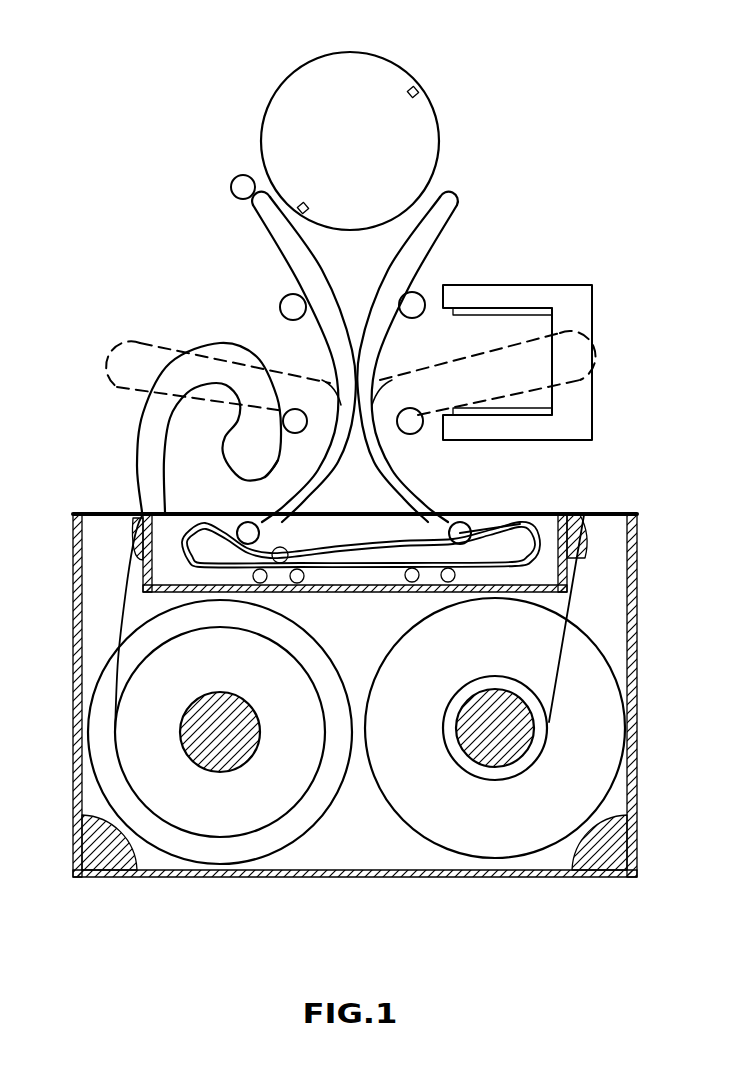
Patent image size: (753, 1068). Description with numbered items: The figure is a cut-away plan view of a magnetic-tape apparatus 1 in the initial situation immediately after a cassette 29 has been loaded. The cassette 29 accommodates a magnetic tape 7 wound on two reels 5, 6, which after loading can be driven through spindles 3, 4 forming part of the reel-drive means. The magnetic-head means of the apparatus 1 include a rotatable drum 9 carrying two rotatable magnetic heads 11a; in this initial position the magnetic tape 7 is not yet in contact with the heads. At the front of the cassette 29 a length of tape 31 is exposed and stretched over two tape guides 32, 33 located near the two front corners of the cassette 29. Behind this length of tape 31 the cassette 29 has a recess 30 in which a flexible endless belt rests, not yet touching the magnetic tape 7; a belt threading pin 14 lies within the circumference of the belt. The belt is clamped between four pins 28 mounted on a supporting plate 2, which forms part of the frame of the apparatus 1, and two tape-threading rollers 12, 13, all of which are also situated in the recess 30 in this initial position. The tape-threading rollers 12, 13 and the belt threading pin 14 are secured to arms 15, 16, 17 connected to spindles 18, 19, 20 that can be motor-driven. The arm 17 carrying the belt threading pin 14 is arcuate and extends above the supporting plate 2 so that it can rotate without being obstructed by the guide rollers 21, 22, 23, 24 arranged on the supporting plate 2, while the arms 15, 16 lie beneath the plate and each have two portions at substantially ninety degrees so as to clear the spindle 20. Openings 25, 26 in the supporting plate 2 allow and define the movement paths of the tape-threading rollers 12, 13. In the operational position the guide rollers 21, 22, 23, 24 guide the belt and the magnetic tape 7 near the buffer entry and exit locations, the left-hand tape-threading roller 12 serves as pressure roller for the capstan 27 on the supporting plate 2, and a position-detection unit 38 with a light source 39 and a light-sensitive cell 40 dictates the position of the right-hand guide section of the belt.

The magnetic-tape apparatus 1 is at (508, 170).
The supporting plate 2 is at (172, 238).
The spindle 3 is at (203, 753).
The spindle 4 is at (485, 747).
The reel 5 is at (293, 772).
The reel 6 is at (450, 745).
The magnetic tape 7 is at (577, 597).
The rotatable drum 9 is at (375, 86).
The rotatable magnetic head 11a is at (420, 87).
The tape-threading roller 12 is at (236, 515).
The tape-threading roller 13 is at (475, 508).
The belt threading pin 14 is at (305, 548).
The arm 15 is at (160, 358).
The arm 16 is at (472, 378).
The arm 17 is at (148, 467).
The spindle 18 is at (133, 360).
The spindle 19 is at (572, 357).
The spindle 20 is at (250, 452).
The guide roller 21 is at (290, 296).
The guide roller 22 is at (293, 410).
The guide roller 23 is at (415, 297).
The guide roller 24 is at (413, 430).
The opening 25 is at (312, 475).
The opening 26 is at (385, 460).
The capstan 27 is at (237, 183).
The pins 28 is at (430, 573).
The cassette 29 is at (72, 683).
The recess 30 is at (548, 545).
The length of tape 31 is at (495, 497).
The tape guide 32 is at (137, 520).
The tape guide 33 is at (580, 513).
The position-detection unit 38 is at (585, 410).
The light source 39 is at (508, 308).
The light-sensitive cell 40 is at (515, 415).